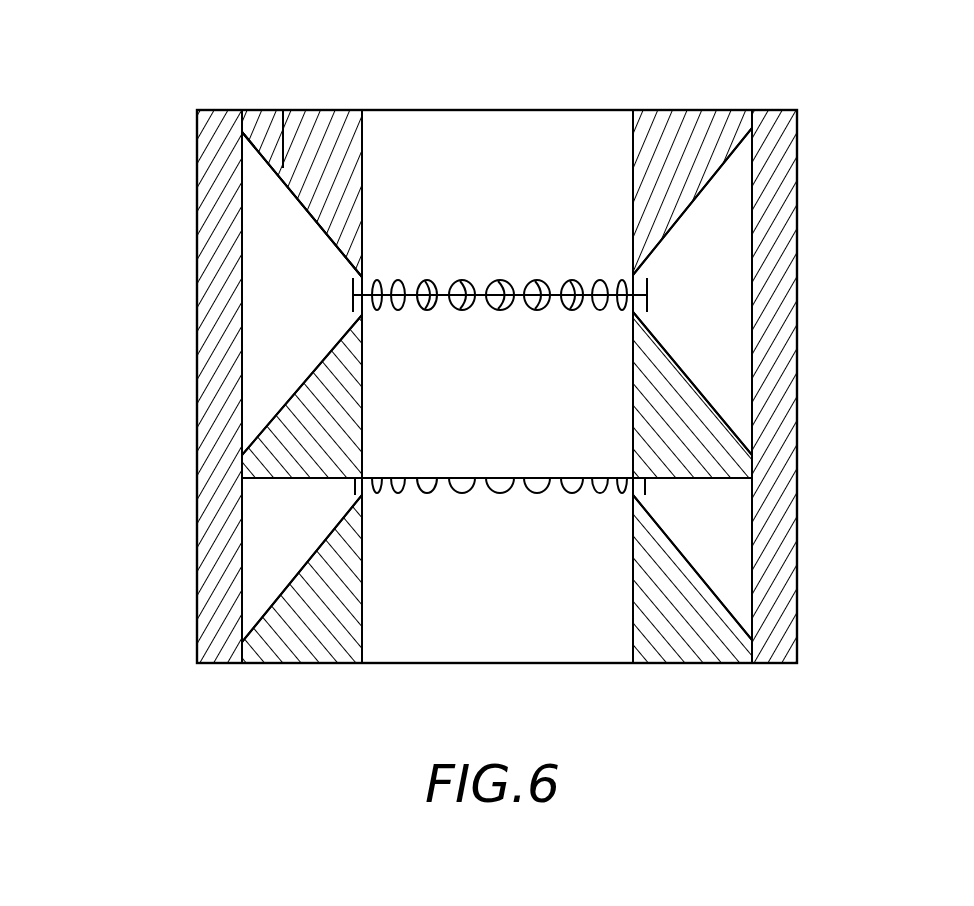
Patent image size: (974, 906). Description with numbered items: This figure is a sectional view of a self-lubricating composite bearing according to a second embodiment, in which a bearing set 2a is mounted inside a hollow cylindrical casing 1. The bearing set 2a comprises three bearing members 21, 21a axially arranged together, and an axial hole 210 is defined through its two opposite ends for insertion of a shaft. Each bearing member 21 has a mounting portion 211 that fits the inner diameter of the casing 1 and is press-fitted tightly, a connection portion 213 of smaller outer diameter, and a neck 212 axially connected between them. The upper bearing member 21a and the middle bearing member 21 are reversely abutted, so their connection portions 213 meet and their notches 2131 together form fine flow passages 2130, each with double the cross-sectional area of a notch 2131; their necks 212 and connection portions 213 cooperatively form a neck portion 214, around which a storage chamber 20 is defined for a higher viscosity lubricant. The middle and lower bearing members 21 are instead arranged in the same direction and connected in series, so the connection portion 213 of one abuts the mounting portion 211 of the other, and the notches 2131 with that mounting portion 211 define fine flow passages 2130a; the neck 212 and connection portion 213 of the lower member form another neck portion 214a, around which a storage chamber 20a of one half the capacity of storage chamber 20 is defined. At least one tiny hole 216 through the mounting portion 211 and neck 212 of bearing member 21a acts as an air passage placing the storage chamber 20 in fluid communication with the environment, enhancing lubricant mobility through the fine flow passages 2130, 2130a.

The casing 1 is at (783, 150).
The bearing set 2a is at (123, 193).
The storage chamber 20 is at (258, 183).
The storage chamber 20a is at (258, 600).
The bearing member 21 is at (325, 420).
The bearing member 21a is at (337, 178).
The tiny hole 216 is at (291, 112).
The axial hole 210 is at (477, 158).
The mounting portion 211 is at (674, 112).
The neck 212 is at (708, 190).
The connection portion 213 is at (609, 303).
The fine flow passage 2130 is at (497, 305).
The notch 2131 is at (535, 289).
The fine flow passage 2130a is at (540, 483).
The neck portion 214 is at (647, 293).
The neck portion 214a is at (655, 546).